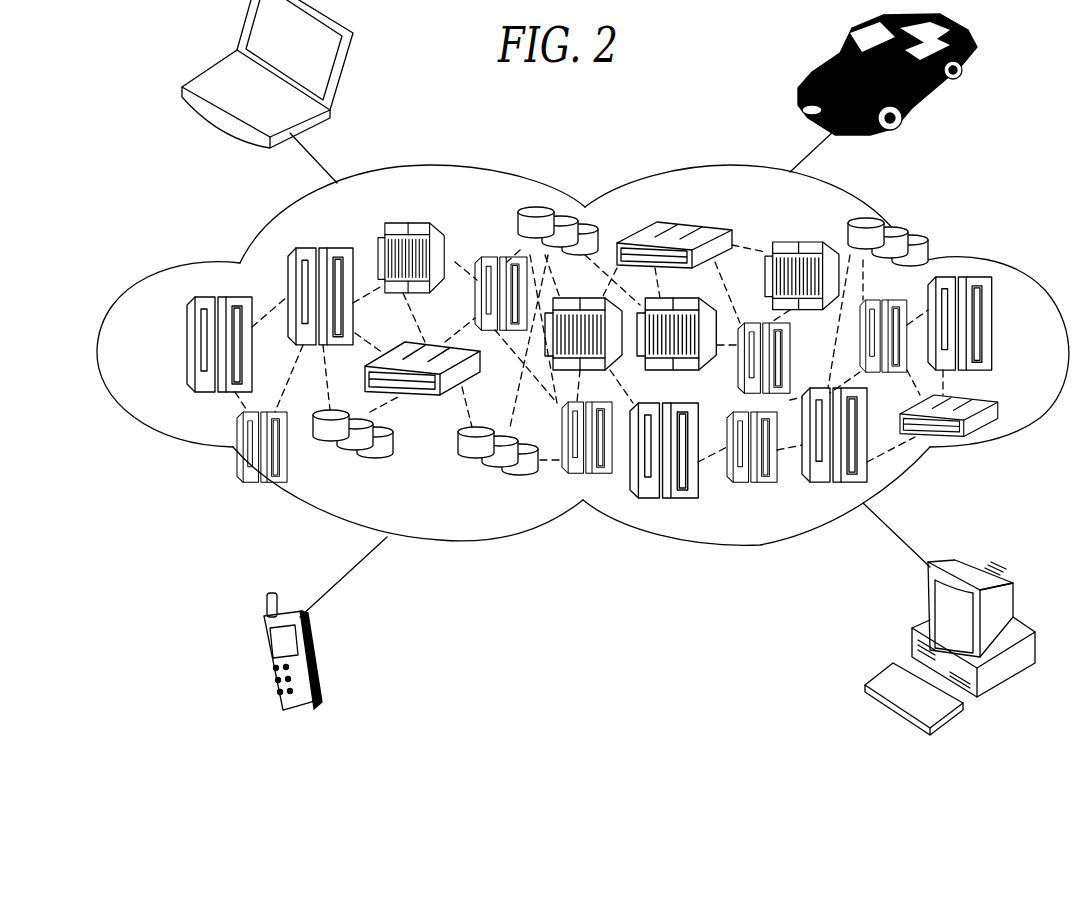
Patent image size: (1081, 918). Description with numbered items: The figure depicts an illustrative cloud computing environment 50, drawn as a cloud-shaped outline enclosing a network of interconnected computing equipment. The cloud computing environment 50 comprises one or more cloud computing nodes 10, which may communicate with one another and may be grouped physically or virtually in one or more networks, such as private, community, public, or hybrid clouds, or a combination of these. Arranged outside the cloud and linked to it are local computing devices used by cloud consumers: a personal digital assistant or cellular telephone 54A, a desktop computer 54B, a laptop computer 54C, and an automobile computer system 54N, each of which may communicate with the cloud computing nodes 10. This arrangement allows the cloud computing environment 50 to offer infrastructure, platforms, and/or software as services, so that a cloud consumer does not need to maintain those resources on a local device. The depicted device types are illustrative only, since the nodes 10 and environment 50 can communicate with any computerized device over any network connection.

The cloud computing environment 50 is at (1023, 268).
The cloud computing node 10 is at (983, 428).
The personal digital assistant or cellular telephone 54A is at (322, 618).
The desktop computer 54B is at (920, 620).
The laptop computer 54C is at (220, 63).
The automobile computer system 54N is at (822, 70).